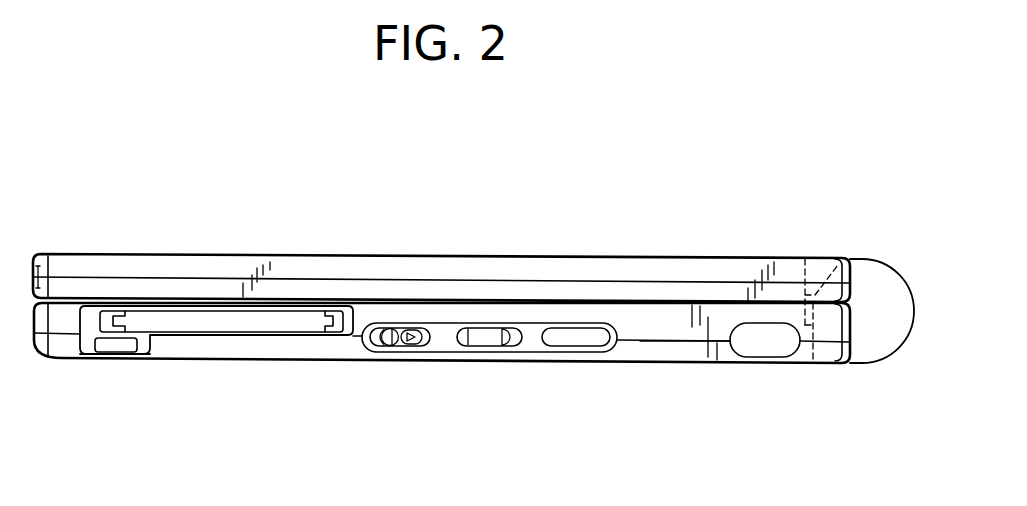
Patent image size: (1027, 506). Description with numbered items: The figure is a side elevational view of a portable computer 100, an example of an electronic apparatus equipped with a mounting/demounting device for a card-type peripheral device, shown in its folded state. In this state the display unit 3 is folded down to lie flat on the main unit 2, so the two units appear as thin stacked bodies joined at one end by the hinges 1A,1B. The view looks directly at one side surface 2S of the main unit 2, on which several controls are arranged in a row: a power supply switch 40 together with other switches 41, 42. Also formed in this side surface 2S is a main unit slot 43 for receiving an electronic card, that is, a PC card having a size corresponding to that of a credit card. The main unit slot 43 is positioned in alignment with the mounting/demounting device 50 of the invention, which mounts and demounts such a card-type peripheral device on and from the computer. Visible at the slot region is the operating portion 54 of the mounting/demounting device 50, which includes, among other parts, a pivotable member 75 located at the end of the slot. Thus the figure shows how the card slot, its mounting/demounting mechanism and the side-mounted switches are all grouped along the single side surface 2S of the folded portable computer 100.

The portable computer 100 is at (617, 201).
The display unit 3 is at (487, 257).
The main unit 2 is at (300, 348).
The side surface 2S is at (678, 352).
The hinges 1A,1B is at (858, 352).
The mounting/demounting device 50 is at (103, 305).
The main unit slot 43 is at (207, 327).
The pivotable member 75 is at (110, 343).
The operating portion 54 is at (127, 364).
The power supply switch 40 is at (397, 338).
The switch 41 is at (485, 338).
The switch 42 is at (575, 338).